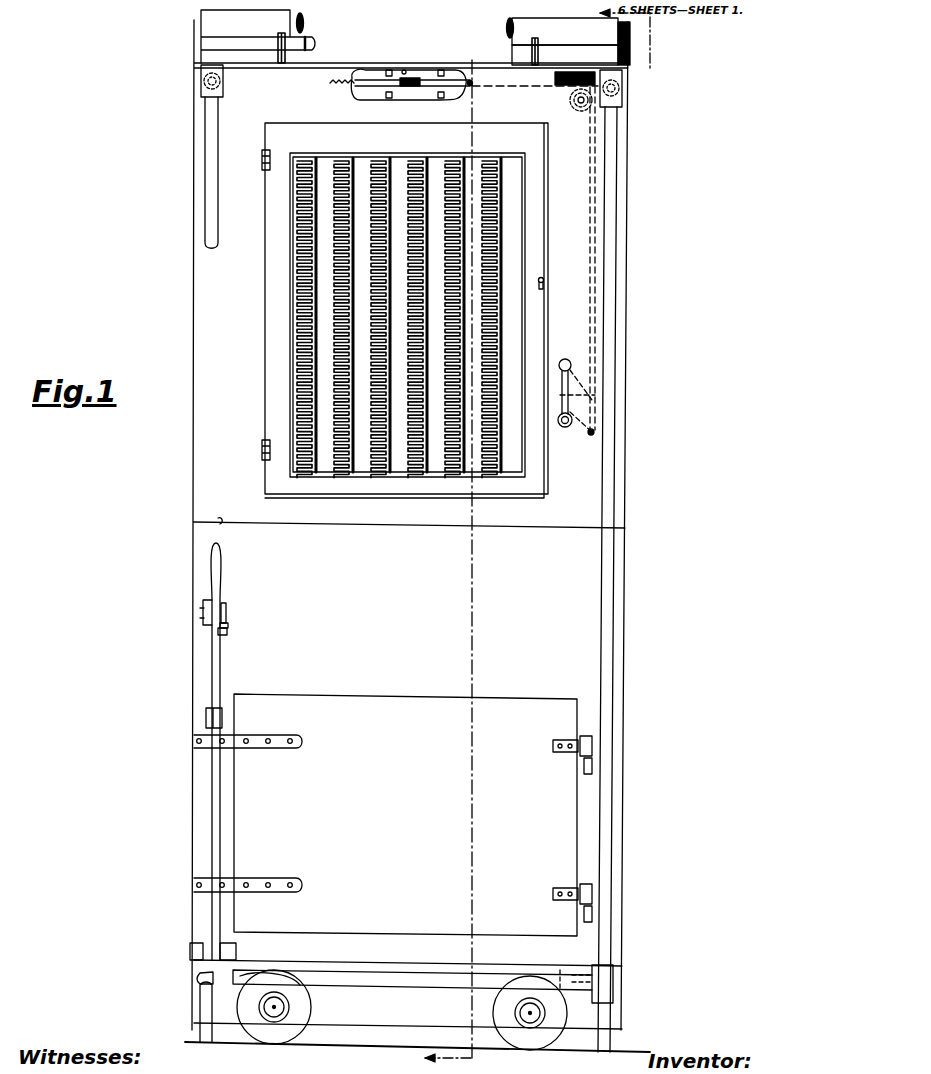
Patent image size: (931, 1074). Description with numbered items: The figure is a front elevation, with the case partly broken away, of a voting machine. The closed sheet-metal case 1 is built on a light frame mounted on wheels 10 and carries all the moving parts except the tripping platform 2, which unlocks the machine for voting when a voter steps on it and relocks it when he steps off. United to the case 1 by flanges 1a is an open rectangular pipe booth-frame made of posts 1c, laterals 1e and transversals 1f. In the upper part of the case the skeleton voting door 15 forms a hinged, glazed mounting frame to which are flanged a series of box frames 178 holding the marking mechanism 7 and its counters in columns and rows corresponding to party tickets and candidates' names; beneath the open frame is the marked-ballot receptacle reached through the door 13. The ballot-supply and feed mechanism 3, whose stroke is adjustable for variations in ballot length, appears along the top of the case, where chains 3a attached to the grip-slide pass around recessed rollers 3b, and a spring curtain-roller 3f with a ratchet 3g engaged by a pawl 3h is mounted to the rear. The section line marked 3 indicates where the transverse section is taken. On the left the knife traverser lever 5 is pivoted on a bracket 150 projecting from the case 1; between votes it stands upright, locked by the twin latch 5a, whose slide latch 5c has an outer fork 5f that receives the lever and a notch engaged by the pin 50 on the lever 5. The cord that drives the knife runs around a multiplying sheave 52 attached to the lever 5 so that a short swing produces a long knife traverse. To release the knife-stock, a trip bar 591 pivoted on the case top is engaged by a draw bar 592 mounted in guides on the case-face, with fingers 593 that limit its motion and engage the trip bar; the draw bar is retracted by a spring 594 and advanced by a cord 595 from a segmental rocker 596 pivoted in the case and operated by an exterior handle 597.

The case 1 is at (417, 536).
The flanges 1a is at (223, 80).
The posts 1c is at (213, 208).
The laterals 1e is at (436, 976).
The transversals 1f is at (222, 92).
The tripping platform 2 is at (398, 968).
The ballot-supply and ballot feed mechanism 3 is at (530, 539).
The chains 3a is at (279, 36).
The roller 3b is at (246, 40).
The spring curtain-roller 3f is at (303, 20).
The ratchet 3g is at (606, 56).
The pawl 3h is at (626, 26).
The lever 5 is at (214, 680).
The twin latch 5a is at (228, 626).
The limited-slide latch 5c is at (226, 610).
The fork 5f is at (212, 598).
The marking mechanism 7 is at (297, 302).
The wheels 10 is at (304, 1020).
The door 13 is at (388, 700).
The skeleton voting door 15 is at (542, 296).
The pin 50 is at (226, 634).
The sheave 52 is at (222, 720).
The bracket 150 is at (236, 950).
The box frames 178 is at (308, 165).
The trip bar 591 is at (411, 78).
The draw bar 592 is at (407, 92).
The fingers 593 is at (452, 68).
The spring 594 is at (368, 48).
The cord 595 is at (472, 80).
The segmental rocker 596 is at (590, 395).
The handle 597 is at (572, 365).